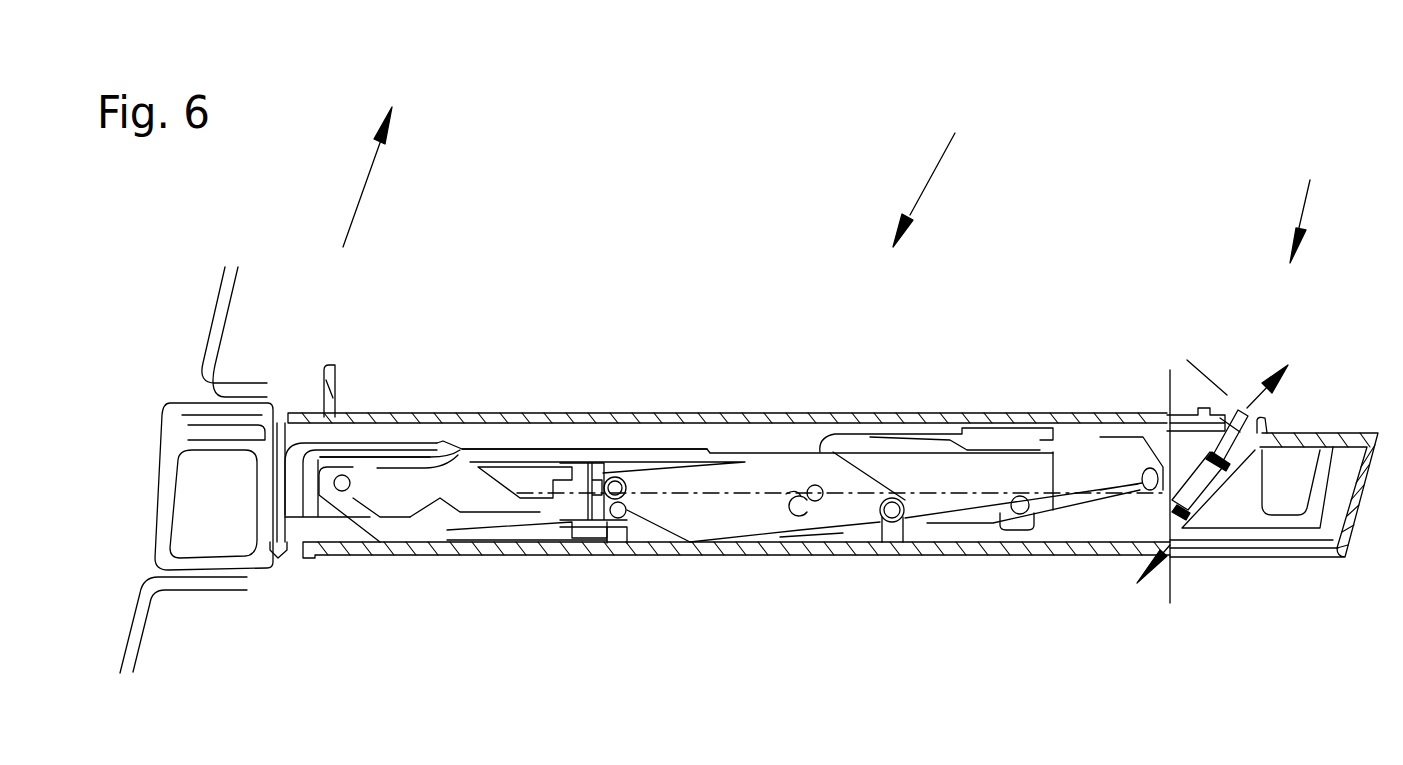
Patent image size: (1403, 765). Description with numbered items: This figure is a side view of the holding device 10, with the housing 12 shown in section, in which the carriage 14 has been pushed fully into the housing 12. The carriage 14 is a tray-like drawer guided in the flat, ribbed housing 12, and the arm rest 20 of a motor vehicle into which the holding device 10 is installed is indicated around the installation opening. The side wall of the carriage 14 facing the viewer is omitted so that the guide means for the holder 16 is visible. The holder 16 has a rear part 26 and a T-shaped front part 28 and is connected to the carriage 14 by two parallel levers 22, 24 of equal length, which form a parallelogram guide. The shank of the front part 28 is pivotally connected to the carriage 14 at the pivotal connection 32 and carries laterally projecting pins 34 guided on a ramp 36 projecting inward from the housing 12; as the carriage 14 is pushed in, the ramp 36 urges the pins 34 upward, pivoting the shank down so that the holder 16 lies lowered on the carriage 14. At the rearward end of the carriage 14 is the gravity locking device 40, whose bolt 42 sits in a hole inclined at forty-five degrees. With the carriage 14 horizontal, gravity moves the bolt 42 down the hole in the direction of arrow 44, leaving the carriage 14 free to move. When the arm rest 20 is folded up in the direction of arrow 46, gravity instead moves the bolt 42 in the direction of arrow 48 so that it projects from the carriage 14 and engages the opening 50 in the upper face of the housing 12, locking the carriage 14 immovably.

The holding device 10 is at (939, 169).
The housing 12 is at (700, 413).
The carriage 14 is at (318, 530).
The holder 16 is at (525, 455).
The arm rest 20 is at (137, 643).
The front lever 22 is at (463, 520).
The lever 24 is at (716, 522).
The rear part 26 is at (525, 455).
The front part 28 is at (323, 450).
The pivotal connection 32 is at (1018, 503).
The pins 34 is at (1143, 487).
The ramp 36 is at (944, 490).
The gravity locking device 40 is at (1309, 202).
The bolt 42 is at (1200, 490).
The arrow 44 is at (1172, 553).
The arrow 46 is at (368, 182).
The arrow 48 is at (1247, 378).
The opening 50 is at (1180, 357).